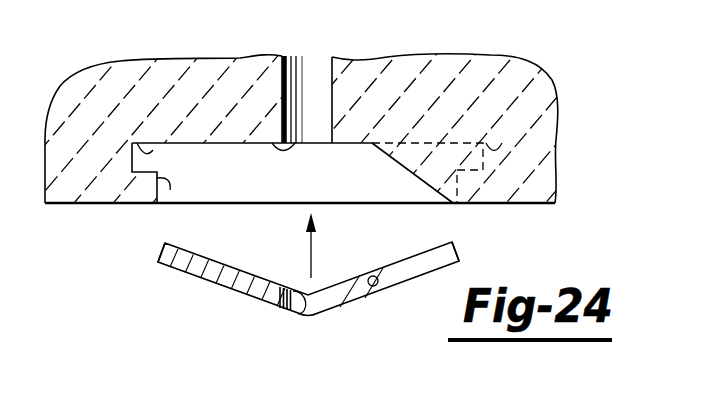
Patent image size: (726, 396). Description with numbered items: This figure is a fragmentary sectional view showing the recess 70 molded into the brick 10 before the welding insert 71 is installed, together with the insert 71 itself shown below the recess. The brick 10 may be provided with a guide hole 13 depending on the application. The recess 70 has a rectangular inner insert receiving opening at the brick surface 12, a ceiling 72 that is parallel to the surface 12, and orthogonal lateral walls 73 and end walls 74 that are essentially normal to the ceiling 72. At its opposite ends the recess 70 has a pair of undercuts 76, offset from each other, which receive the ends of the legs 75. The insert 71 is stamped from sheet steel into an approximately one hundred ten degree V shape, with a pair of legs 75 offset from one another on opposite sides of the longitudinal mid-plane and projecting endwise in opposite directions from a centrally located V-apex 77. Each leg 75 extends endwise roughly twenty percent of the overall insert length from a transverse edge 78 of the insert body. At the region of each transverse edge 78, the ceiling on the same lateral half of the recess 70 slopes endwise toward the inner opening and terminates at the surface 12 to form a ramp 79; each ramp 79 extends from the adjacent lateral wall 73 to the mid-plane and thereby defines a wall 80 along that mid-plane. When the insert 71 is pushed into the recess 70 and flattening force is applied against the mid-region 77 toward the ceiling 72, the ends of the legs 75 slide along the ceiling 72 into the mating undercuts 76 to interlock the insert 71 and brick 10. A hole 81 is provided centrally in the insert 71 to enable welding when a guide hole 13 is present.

The brick 10 is at (548, 70).
The brick surface 12 is at (524, 203).
The guide hole 13 is at (288, 77).
The recess 70 is at (212, 183).
The welding insert 71 is at (492, 4).
The ceiling 72 is at (308, 143).
The lateral walls 73 is at (323, 186).
The end walls 74 is at (245, 145).
The legs 75 is at (182, 275).
The undercuts 76 is at (143, 135).
The V-apex 77 is at (447, 0).
The transverse edge 78 is at (372, 278).
The ramp 79 is at (218, 163).
The wall 80 is at (177, 153).
The hole 81 is at (297, 318).